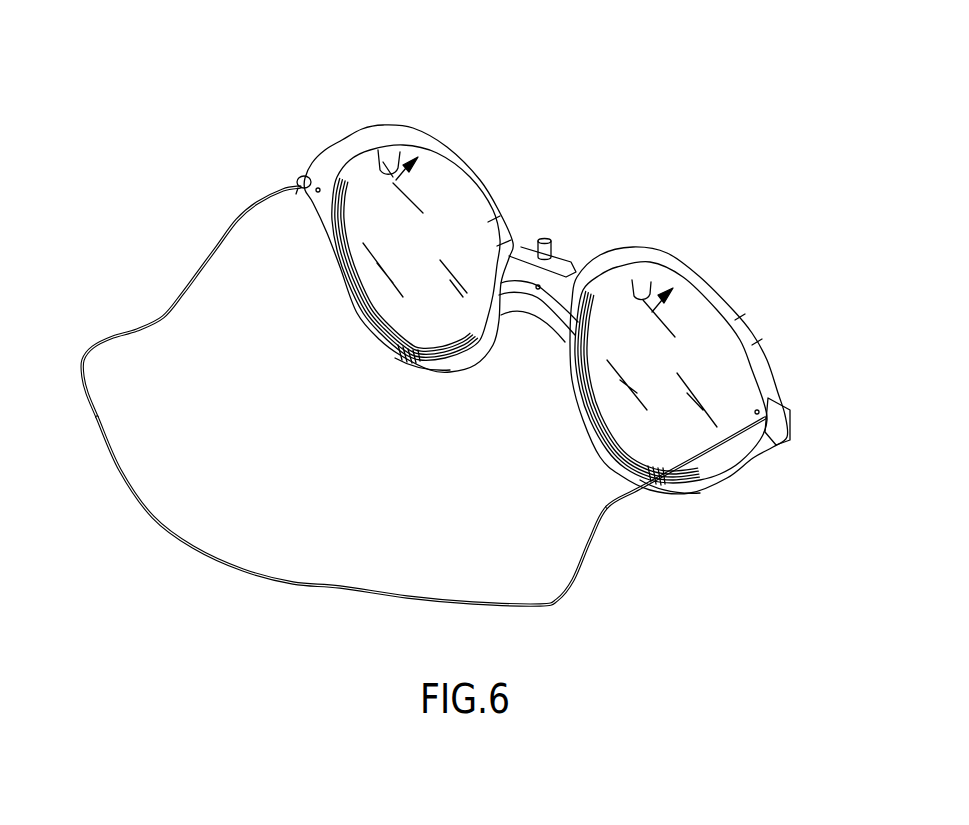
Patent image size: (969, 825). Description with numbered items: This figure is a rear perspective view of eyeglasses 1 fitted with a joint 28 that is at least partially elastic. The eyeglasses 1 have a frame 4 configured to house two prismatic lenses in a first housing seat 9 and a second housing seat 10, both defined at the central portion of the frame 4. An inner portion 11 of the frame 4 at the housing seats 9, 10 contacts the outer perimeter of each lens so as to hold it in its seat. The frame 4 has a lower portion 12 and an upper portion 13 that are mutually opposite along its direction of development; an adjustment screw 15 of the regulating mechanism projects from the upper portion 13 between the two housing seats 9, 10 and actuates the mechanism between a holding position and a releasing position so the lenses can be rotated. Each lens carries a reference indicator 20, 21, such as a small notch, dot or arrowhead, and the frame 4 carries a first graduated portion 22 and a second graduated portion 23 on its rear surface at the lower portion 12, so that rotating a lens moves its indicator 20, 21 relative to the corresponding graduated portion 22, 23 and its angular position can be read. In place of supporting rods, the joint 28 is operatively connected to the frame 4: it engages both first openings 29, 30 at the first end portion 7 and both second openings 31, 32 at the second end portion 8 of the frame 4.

The eyeglasses 1 is at (116, 71).
The frame 4 is at (706, 281).
The first end portion 7 is at (782, 472).
The second end portion 8 is at (264, 169).
The first housing seat 9 is at (636, 282).
The second housing seat 10 is at (381, 150).
The inner portion 11 is at (385, 310).
The lower portion 12 is at (311, 291).
The upper portion 13 is at (796, 304).
The adjustment screw 15 is at (548, 238).
The first reference indicator 20 is at (652, 466).
The second reference indicator 21 is at (400, 348).
The first graduated portion 22 is at (656, 512).
The second graduated portion 23 is at (410, 382).
The joint 28 is at (150, 518).
The first opening 29 is at (782, 409).
The first opening 30 is at (760, 398).
The second opening 31 is at (305, 176).
The second opening 32 is at (330, 178).